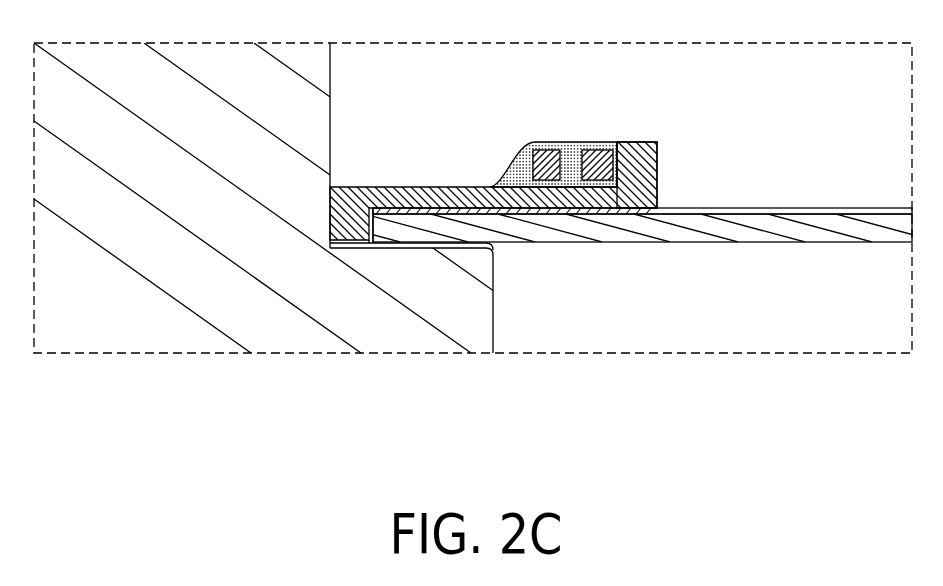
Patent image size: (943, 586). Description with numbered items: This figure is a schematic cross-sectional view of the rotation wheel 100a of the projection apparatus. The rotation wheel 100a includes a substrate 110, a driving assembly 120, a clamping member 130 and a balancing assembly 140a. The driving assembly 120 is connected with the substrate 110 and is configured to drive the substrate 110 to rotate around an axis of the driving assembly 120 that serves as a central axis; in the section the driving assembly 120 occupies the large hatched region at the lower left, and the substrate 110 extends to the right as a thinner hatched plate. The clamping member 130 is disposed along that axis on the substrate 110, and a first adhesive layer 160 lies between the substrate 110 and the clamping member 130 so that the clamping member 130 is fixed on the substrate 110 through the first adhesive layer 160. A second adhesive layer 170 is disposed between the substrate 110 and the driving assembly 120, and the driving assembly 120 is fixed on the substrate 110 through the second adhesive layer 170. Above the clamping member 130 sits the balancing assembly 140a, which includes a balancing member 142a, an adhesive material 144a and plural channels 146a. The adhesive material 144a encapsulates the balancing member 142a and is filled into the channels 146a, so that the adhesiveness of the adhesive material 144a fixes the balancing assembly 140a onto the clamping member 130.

The rotation wheel 100a is at (742, 430).
The substrate 110 is at (669, 232).
The driving assembly 120 is at (300, 333).
The clamping member 130 is at (657, 183).
The balancing assembly 140a is at (572, 127).
The balancing member 142a is at (634, 153).
The adhesive material 144a is at (523, 175).
The channels 146a is at (565, 160).
The first adhesive layer 160 is at (577, 214).
The second adhesive layer 170 is at (498, 247).